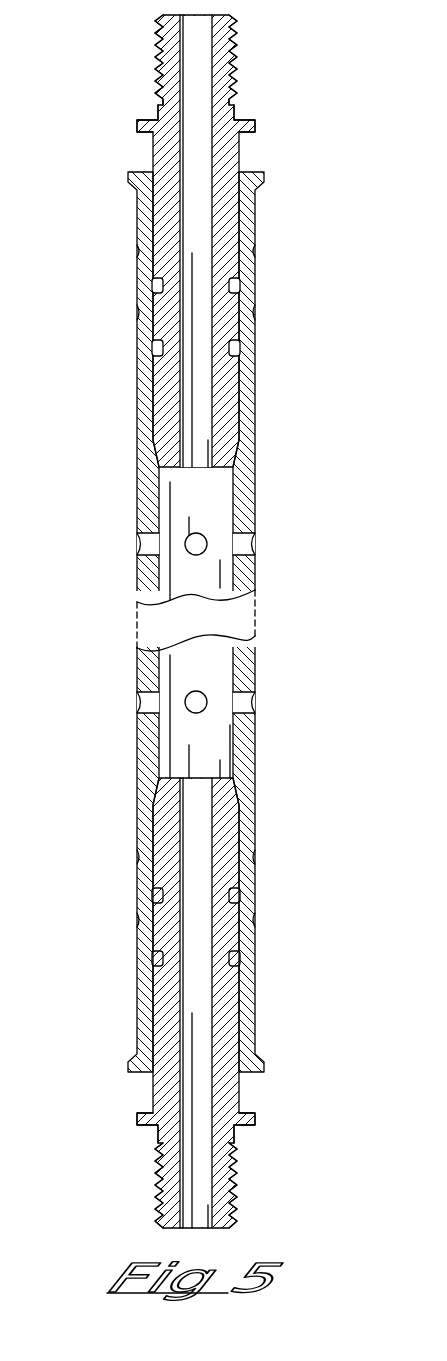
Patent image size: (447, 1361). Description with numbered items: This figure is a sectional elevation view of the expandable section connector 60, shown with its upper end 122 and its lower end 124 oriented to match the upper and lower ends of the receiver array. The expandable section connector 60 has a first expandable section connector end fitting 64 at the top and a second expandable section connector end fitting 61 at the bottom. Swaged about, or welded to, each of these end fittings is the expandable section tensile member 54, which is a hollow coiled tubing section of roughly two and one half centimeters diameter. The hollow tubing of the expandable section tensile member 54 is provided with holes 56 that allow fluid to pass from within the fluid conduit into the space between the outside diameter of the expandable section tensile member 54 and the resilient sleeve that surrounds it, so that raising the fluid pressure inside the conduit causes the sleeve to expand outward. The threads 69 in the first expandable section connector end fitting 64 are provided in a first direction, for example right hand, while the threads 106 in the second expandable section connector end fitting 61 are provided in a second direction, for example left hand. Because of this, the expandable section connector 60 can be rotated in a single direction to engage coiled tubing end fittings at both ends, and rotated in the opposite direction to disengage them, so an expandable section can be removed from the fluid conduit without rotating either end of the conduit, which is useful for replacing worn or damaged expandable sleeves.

The expandable section tensile member 54 is at (137, 490).
The holes 56 is at (200, 532).
The expandable section connector 60 is at (286, 516).
The second expandable section connector end fitting 61 is at (242, 1127).
The first expandable section connector end fitting 64 is at (243, 119).
The threads 69 is at (155, 78).
The threads 106 is at (155, 1187).
The upper end 122 is at (268, 50).
The lower end 124 is at (271, 1200).